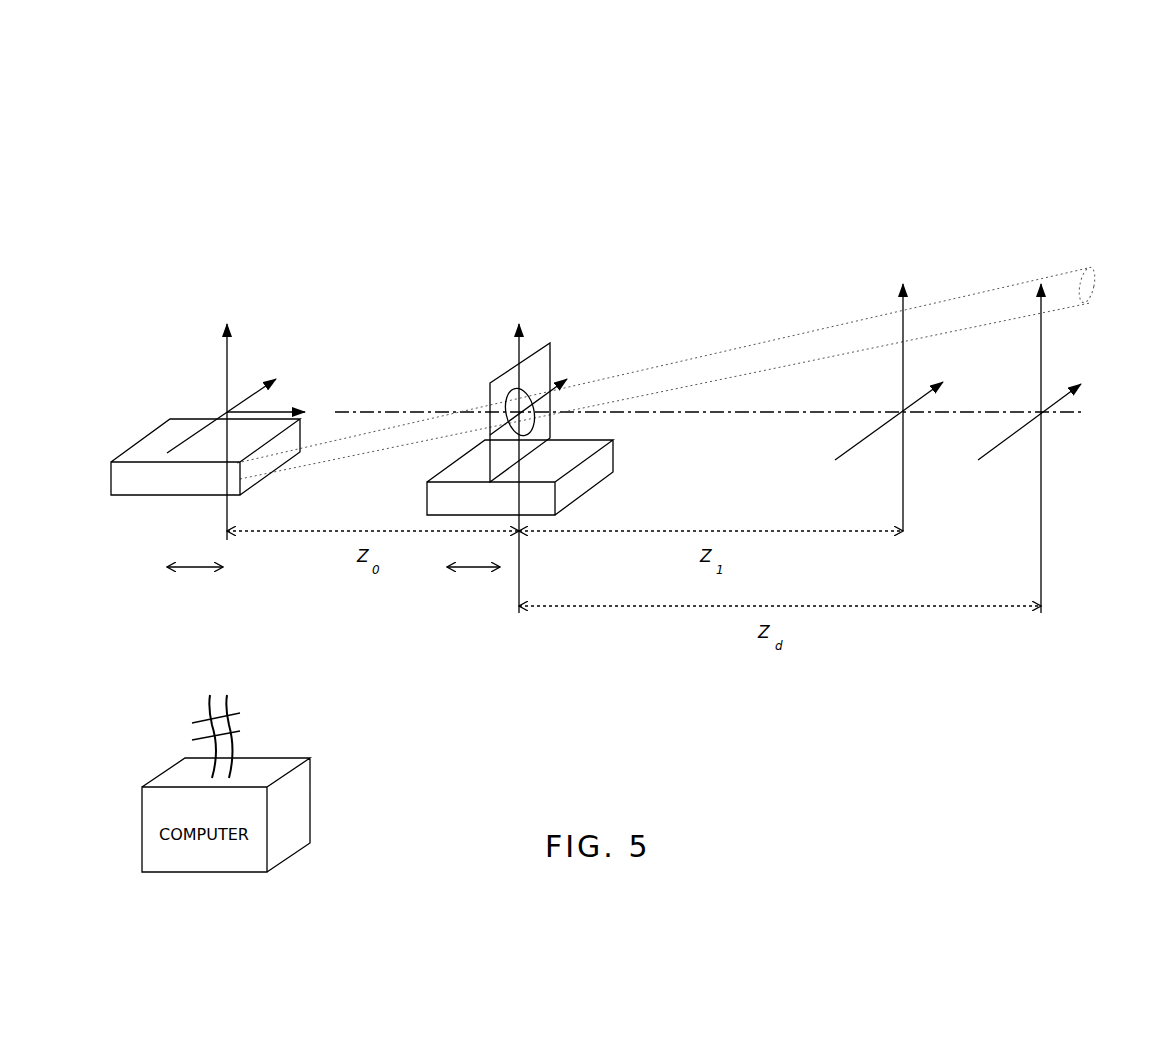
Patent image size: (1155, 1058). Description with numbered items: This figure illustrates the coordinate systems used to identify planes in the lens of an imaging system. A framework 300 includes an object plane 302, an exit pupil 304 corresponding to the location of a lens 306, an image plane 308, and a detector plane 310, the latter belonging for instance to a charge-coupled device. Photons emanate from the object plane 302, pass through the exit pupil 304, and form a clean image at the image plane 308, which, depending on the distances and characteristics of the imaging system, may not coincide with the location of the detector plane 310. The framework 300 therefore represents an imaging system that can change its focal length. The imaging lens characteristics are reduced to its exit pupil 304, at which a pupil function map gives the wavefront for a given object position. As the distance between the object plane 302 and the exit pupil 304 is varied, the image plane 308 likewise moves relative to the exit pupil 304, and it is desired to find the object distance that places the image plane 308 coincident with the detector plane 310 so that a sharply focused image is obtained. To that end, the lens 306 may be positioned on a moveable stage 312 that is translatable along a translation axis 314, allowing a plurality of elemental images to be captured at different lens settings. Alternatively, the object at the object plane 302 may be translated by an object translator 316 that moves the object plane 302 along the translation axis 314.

The framework 300 is at (630, 186).
The object plane 302 is at (221, 194).
The exit pupil 304 is at (515, 205).
The lens 306 is at (503, 383).
The image plane 308 is at (899, 172).
The detector plane 310 is at (1036, 172).
The moveable stage 312 is at (590, 478).
The translation axis 314 is at (198, 568).
The object translator 316 is at (133, 480).